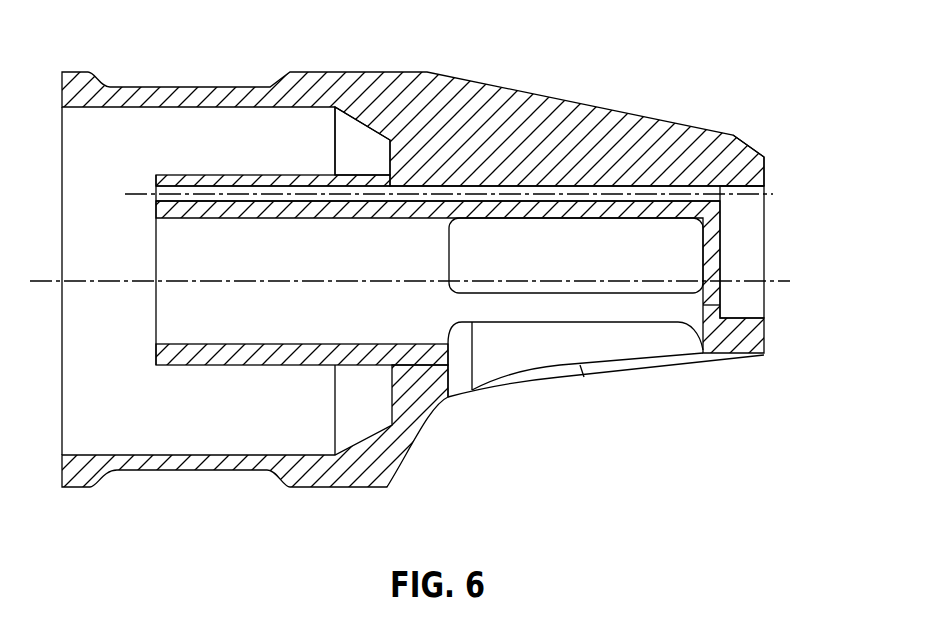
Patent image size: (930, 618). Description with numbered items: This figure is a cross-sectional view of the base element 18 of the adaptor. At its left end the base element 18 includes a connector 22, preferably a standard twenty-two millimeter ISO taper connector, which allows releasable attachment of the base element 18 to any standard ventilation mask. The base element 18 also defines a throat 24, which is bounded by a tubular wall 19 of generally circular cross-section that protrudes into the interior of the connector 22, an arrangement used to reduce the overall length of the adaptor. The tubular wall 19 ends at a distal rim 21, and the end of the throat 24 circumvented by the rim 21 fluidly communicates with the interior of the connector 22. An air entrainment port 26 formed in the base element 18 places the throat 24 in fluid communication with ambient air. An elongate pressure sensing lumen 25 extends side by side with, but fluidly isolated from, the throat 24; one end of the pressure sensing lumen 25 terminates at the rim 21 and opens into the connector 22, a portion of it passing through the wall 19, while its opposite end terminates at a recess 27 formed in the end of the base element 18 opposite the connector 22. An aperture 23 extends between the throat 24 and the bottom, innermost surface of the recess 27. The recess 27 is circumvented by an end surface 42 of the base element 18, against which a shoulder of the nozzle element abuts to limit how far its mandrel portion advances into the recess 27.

The base element 18 is at (712, 108).
The tubular wall 19 is at (257, 176).
The rim 21 is at (157, 360).
The connector 22 is at (158, 95).
The aperture 23 is at (713, 293).
The throat 24 is at (176, 322).
The pressure sensing lumen 25 is at (617, 193).
The air entrainment port 26 is at (528, 353).
The recess 27 is at (753, 242).
The end surface 42 is at (765, 172).